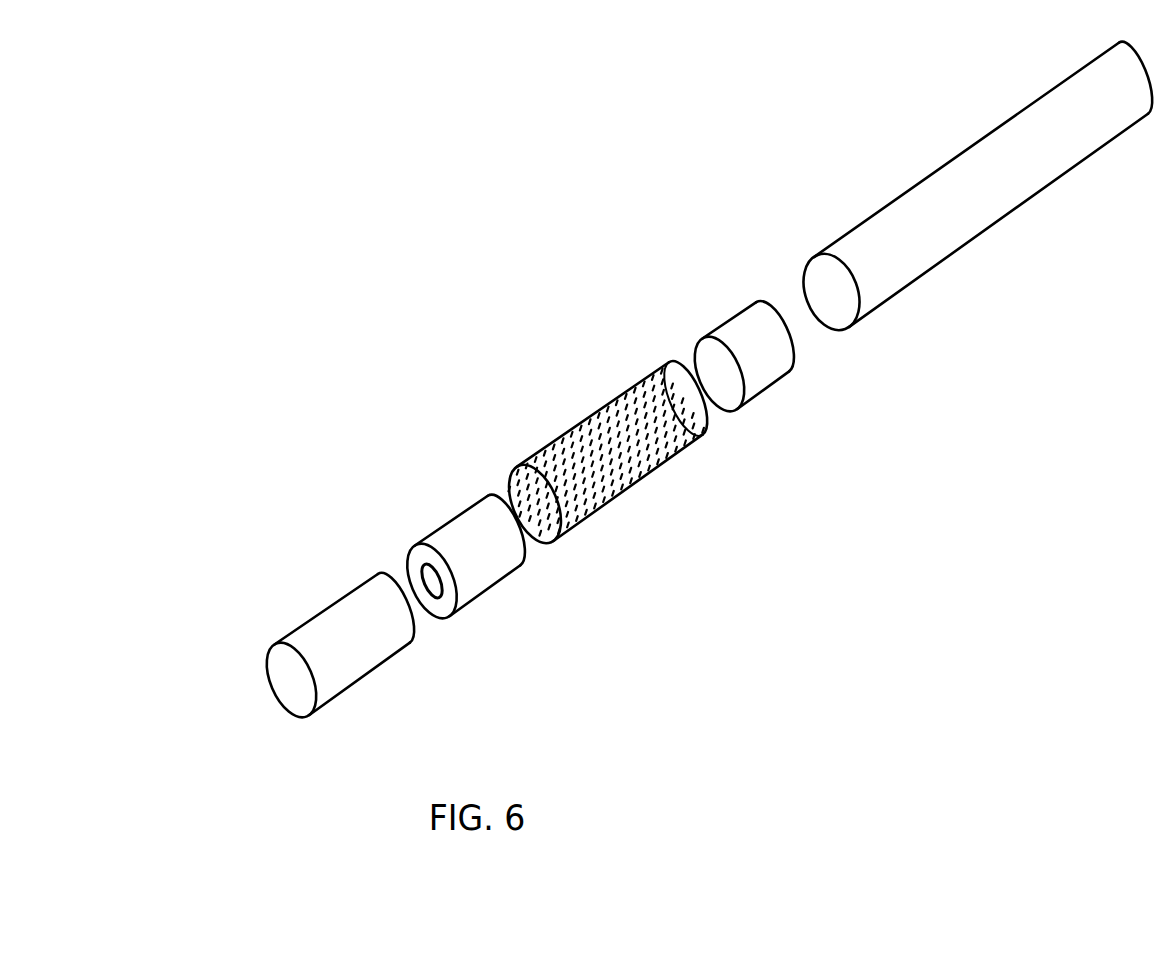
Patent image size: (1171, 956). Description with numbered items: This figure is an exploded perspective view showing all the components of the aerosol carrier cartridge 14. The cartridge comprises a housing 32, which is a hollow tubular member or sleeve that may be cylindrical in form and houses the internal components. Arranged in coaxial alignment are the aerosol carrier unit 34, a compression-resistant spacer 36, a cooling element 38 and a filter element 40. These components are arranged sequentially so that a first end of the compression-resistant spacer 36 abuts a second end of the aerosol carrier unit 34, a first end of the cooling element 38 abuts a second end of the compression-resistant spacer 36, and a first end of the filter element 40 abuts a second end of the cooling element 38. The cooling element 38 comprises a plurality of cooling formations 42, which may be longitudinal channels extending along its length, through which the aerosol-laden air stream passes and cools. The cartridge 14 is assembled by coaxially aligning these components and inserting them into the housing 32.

The aerosol carrier cartridge 14 is at (490, 81).
The housing 32 is at (913, 240).
The aerosol carrier unit 34 is at (315, 642).
The compression-resistant spacer 36 is at (457, 530).
The cooling element 38 is at (600, 407).
The filter element 40 is at (752, 370).
The cooling formations 42 is at (622, 438).